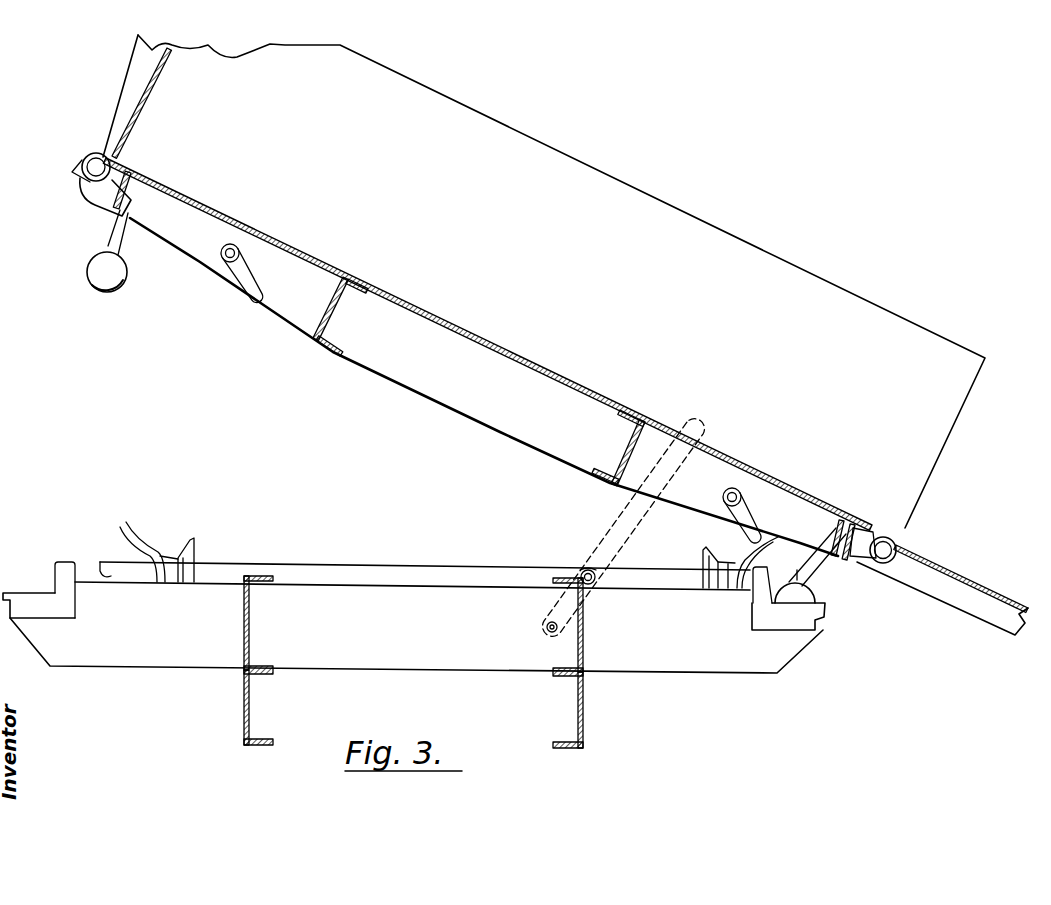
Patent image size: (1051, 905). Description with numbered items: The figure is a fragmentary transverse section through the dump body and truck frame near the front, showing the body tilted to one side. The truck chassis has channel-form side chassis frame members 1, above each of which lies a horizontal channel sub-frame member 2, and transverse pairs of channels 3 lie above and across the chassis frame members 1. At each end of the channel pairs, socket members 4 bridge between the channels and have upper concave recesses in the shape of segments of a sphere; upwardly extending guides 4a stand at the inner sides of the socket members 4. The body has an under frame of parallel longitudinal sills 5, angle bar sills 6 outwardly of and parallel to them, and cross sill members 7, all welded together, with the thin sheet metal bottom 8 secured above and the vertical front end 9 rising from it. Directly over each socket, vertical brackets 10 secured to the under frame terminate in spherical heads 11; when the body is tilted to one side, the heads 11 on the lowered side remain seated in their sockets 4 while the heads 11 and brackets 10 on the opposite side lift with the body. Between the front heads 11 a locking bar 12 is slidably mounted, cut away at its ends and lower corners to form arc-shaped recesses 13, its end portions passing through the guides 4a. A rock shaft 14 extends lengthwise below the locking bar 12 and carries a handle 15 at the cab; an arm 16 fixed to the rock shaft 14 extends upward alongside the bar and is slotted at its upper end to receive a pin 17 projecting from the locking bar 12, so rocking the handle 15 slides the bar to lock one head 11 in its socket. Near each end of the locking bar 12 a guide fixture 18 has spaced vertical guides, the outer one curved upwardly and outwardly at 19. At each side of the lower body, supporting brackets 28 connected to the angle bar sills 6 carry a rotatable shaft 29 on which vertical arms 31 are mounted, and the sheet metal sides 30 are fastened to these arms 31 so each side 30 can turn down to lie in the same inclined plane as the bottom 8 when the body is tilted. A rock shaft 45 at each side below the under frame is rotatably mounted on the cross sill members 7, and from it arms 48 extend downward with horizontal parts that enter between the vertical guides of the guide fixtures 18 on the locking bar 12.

The side chassis frame members 1 is at (243, 698).
The horizontal channel sub-frame member 2 is at (243, 603).
The transverse pairs of channels 3 is at (428, 657).
The socket members 4 is at (60, 605).
The upwardly extending guides 4a is at (66, 560).
The longitudinal sills 5 is at (328, 298).
The angle bar sills 6 is at (140, 178).
The cross sill members 7 is at (501, 437).
The bottom 8 is at (507, 352).
The vertical front end 9 is at (768, 270).
The vertical brackets 10 is at (127, 227).
The spherical heads 11 is at (100, 280).
The locking bar 12 is at (398, 568).
The arc-shaped recesses 13 is at (104, 582).
The rock shaft 14 is at (549, 634).
The handle 15 is at (630, 517).
The arm 16 is at (597, 583).
The pin 17 is at (585, 570).
The guide fixture 18 is at (183, 567).
The curved upper portion of outer guide 19 is at (143, 530).
The supporting brackets 28 is at (100, 190).
The rotatable shaft 29 is at (90, 152).
The vertical sides 30 is at (137, 102).
The vertical arms 31 is at (123, 85).
The rock shaft 45 is at (226, 258).
The arms 48 is at (243, 284).